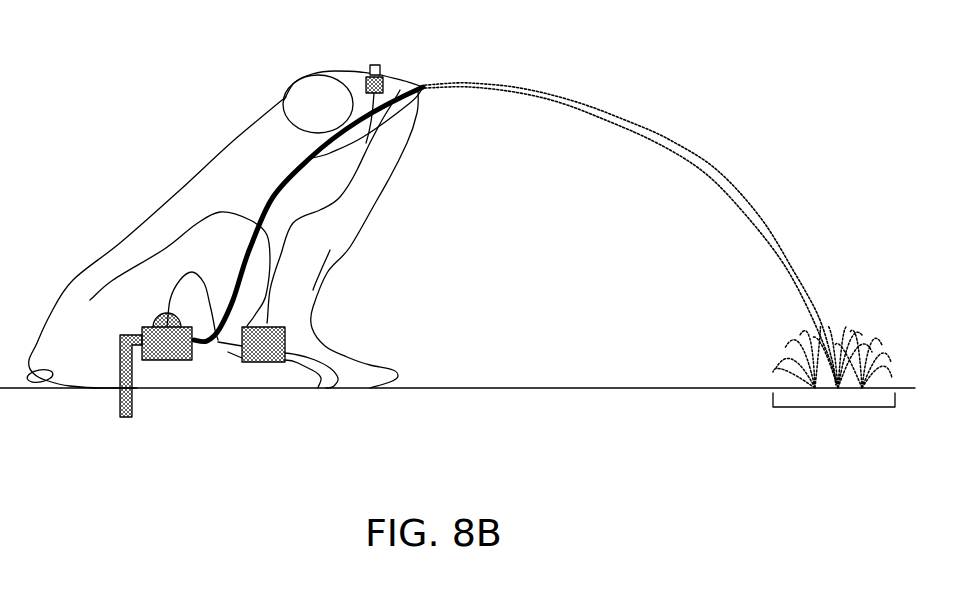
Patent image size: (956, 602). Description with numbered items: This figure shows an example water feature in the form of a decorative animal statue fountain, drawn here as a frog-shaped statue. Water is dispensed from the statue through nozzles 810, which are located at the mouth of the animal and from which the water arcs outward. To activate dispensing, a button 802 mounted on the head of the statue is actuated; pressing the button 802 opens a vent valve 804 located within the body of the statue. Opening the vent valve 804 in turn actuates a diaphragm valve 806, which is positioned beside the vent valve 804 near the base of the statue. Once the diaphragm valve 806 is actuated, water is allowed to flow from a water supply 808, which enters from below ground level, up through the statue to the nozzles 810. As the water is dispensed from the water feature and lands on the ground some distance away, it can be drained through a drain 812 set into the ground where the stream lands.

The button 802 is at (370, 66).
The vent valve 804 is at (287, 333).
The diaphragm valve 806 is at (160, 316).
The water supply 808 is at (118, 400).
The nozzles 810 is at (426, 88).
The drain 812 is at (807, 407).